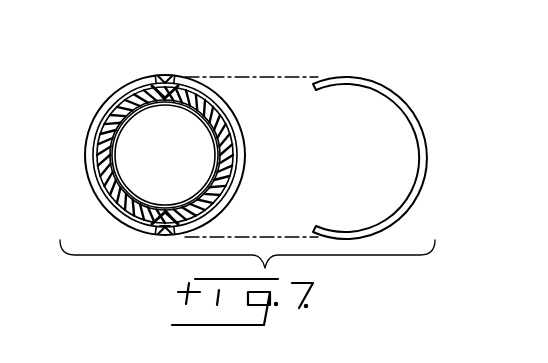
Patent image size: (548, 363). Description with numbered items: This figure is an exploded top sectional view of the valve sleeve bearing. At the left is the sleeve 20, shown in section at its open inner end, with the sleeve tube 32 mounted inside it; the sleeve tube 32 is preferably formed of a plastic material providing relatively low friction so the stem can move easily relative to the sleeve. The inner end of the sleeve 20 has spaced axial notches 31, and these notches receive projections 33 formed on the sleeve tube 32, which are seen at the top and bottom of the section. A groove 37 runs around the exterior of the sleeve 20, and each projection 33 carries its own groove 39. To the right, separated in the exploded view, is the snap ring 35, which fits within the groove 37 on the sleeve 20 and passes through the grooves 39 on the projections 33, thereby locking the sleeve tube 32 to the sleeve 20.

The sleeve 20 is at (87, 132).
The axial notch 31 is at (170, 78).
The sleeve tube 32 is at (205, 123).
The projection 33 is at (160, 84).
The snap ring 35 is at (418, 120).
The groove 37 is at (242, 148).
The groove 39 is at (166, 225).